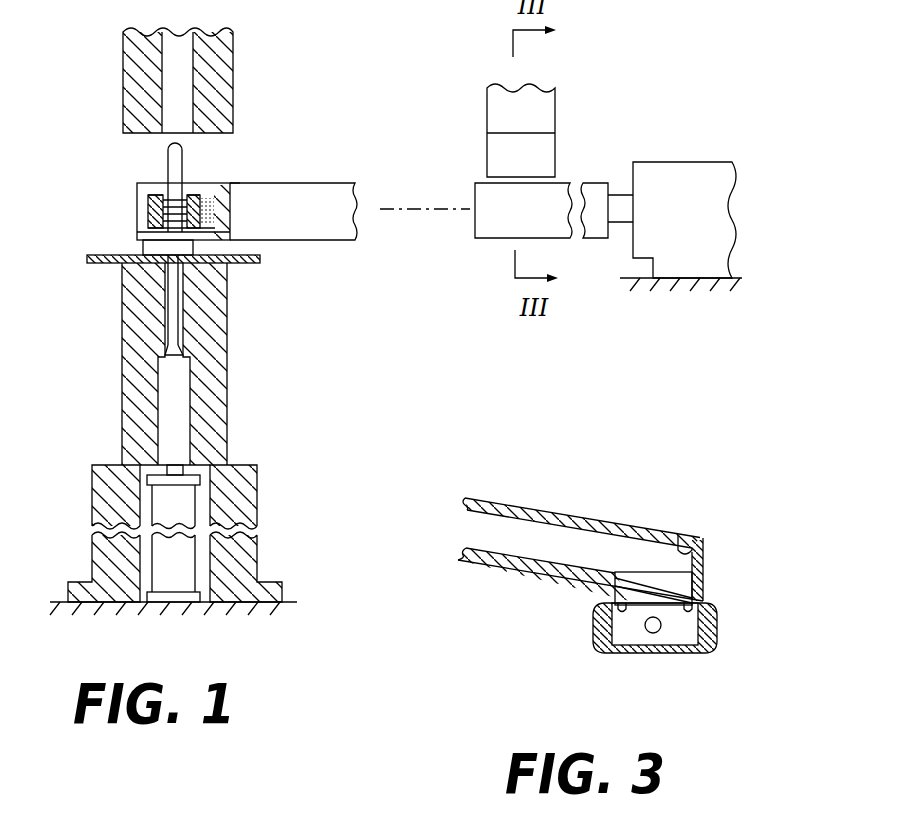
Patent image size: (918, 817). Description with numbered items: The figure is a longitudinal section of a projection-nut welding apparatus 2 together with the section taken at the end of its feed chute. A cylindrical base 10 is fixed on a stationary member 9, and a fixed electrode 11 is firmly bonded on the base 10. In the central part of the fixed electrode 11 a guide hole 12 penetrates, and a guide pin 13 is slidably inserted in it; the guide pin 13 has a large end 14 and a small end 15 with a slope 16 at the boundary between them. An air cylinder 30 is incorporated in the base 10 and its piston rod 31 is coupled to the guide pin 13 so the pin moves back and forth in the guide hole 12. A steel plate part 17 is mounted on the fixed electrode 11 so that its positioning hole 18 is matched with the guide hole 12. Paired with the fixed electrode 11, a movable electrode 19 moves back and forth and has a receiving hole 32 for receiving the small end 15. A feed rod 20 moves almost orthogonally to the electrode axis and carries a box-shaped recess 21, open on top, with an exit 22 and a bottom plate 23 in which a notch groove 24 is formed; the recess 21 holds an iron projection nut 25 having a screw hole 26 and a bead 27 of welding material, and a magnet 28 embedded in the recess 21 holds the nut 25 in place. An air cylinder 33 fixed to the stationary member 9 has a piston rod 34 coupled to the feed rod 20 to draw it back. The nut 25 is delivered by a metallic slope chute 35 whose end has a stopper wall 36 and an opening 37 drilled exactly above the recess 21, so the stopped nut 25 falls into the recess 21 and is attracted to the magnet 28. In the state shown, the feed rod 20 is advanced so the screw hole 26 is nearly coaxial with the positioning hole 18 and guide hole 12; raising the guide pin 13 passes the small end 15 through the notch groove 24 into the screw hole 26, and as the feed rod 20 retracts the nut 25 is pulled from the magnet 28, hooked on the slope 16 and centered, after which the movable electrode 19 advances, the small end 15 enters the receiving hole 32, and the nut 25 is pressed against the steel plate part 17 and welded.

In FIG. 1, the apparatus 2 is at (235, 192).
In FIG. 1, the stationary member 9 is at (283, 598).
In FIG. 1, the cylindrical base 10 is at (257, 504).
In FIG. 1, the fixed electrode 11 is at (228, 339).
In FIG. 1, the guide hole 12 is at (188, 412).
In FIG. 1, the guide pin 13 is at (150, 437).
In FIG. 1, the large end 14 is at (165, 402).
In FIG. 1, the small end 15 is at (172, 318).
In FIG. 1, the slope 16 is at (165, 353).
In FIG. 1, the steel plate part 17 is at (247, 262).
In FIG. 1, the positioning hole 18 is at (196, 268).
In FIG. 1, the movable electrode 19 is at (233, 68).
In FIG. 1, the feed rod 20 is at (314, 183).
In FIG. 3, the feed rod 20 is at (717, 623).
In FIG. 1, the recess 21 is at (143, 198).
In FIG. 3, the recess 21 is at (618, 625).
In FIG. 1, the exit of the recess 22 is at (138, 210).
In FIG. 1, the bottom plate 23 is at (138, 273).
In FIG. 3, the bottom plate 23 is at (625, 652).
In FIG. 1, the notch groove 24 is at (137, 234).
In FIG. 3, the notch groove 24 is at (655, 650).
In FIG. 1, the projection nut 25 is at (166, 189).
In FIG. 3, the projection nut 25 is at (662, 568).
In FIG. 1, the screw hole 26 is at (182, 191).
In FIG. 1, the bead of welding material 27 is at (148, 225).
In FIG. 1, the magnet 28 is at (232, 211).
In FIG. 3, the magnet 28 is at (665, 630).
In FIG. 1, the air cylinder 30 is at (152, 560).
In FIG. 1, the piston rod 31 is at (168, 483).
In FIG. 1, the receiving hole 32 is at (175, 105).
In FIG. 1, the air cylinder 33 is at (680, 162).
In FIG. 1, the piston rod 34 is at (627, 203).
In FIG. 1, the slope chute 35 is at (484, 155).
In FIG. 3, the slope chute 35 is at (490, 562).
In FIG. 3, the stopper wall 36 is at (680, 535).
In FIG. 3, the opening 37 is at (628, 578).